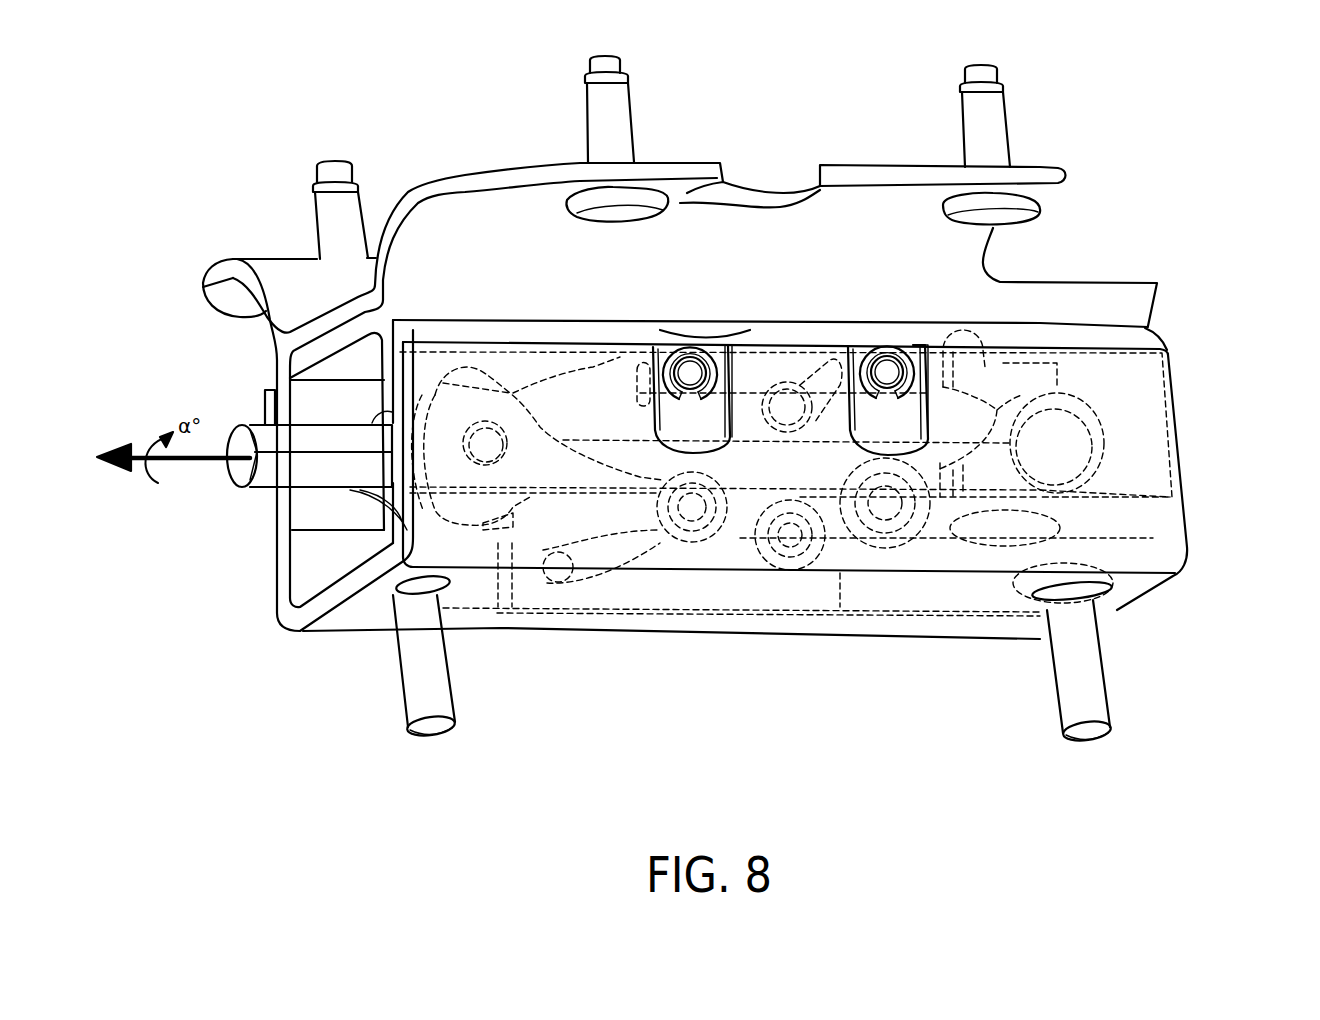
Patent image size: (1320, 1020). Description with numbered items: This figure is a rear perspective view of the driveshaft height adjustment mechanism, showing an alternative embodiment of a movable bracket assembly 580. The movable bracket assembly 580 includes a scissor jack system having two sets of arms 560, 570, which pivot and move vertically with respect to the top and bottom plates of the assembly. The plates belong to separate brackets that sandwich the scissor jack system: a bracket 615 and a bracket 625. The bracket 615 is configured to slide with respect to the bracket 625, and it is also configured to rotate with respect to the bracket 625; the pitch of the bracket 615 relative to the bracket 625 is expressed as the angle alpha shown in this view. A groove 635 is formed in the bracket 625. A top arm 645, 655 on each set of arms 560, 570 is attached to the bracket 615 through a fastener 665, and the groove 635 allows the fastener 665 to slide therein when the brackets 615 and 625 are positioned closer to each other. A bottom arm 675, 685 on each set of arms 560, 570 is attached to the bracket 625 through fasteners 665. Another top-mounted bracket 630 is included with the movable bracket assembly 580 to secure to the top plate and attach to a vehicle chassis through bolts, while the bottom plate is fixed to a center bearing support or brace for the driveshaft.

The set of arms 560 is at (1077, 463).
The set of arms 570 is at (462, 473).
The movable bracket assembly 580 is at (1236, 93).
The bracket 615 is at (1145, 342).
The bracket 625 is at (1130, 553).
The top-mounted bracket 630 is at (760, 227).
The groove 635 is at (725, 372).
The top arm 645 is at (965, 410).
The top arm 655 is at (560, 407).
The fastener 665 is at (692, 372).
The bottom arm 675 is at (580, 517).
The bottom arm 685 is at (960, 517).